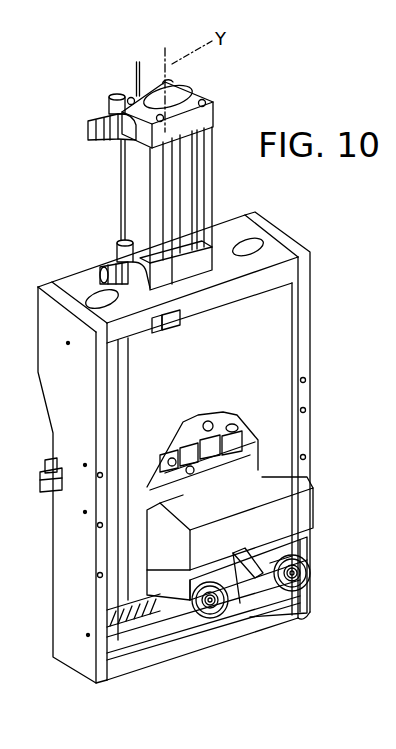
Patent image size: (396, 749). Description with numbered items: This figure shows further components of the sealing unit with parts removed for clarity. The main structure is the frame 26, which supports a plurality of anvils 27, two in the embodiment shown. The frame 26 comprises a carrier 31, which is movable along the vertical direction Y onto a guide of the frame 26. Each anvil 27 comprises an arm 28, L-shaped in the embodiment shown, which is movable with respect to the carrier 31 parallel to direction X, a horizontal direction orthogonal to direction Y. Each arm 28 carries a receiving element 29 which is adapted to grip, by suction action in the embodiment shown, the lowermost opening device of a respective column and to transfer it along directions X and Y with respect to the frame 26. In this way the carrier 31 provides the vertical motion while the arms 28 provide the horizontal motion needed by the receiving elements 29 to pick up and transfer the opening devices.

The frame 26 is at (266, 350).
The anvil 27 is at (291, 553).
The arm 28 is at (285, 483).
The receiving element 29 is at (312, 573).
The carrier 31 is at (199, 303).